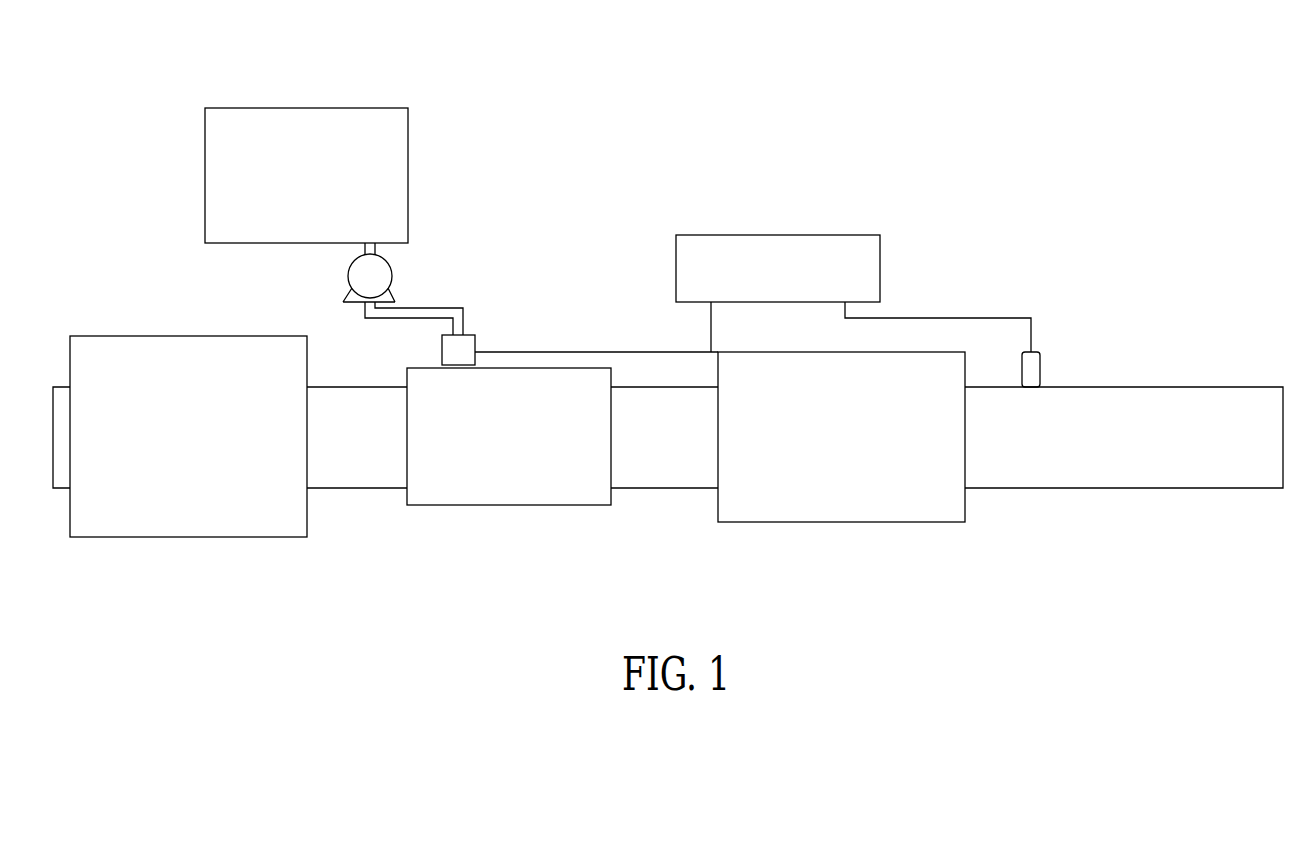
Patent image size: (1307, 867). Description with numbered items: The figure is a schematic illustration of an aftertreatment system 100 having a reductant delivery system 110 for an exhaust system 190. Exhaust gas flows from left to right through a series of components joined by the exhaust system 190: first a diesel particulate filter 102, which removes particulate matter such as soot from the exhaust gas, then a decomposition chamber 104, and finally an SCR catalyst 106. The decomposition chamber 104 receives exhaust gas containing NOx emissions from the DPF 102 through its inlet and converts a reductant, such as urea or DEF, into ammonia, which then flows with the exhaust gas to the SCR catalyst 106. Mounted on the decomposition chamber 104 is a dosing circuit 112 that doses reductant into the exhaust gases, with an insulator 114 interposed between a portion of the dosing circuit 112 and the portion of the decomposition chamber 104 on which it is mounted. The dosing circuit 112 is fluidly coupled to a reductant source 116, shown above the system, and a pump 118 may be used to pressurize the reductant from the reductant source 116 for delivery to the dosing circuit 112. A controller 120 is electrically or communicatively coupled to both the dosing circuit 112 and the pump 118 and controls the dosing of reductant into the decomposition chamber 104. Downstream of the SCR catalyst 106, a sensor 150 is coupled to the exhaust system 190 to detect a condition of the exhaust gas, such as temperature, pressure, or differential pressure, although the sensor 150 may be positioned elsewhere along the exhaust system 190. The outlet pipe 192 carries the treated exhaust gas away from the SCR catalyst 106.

The reductant source 116 is at (363, 108).
The pump 118 is at (348, 280).
The dosing circuit 112 is at (477, 345).
The insulator 114 is at (442, 363).
The decomposition chamber 104 is at (603, 367).
The diesel particulate filter 102 is at (218, 538).
The SCR catalyst 106 is at (853, 522).
The controller 120 is at (762, 235).
The sensor 150 is at (1063, 360).
The aftertreatment system 100 is at (922, 294).
The reductant delivery system 110 is at (568, 277).
The exhaust system 190 is at (396, 580).
The tailpipe 192 is at (1205, 500).